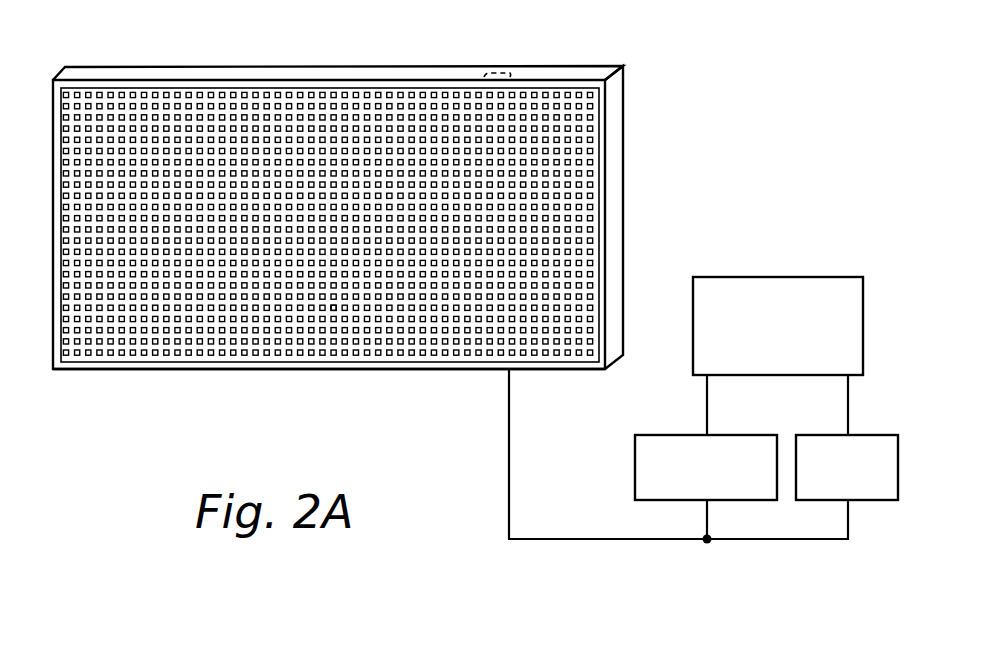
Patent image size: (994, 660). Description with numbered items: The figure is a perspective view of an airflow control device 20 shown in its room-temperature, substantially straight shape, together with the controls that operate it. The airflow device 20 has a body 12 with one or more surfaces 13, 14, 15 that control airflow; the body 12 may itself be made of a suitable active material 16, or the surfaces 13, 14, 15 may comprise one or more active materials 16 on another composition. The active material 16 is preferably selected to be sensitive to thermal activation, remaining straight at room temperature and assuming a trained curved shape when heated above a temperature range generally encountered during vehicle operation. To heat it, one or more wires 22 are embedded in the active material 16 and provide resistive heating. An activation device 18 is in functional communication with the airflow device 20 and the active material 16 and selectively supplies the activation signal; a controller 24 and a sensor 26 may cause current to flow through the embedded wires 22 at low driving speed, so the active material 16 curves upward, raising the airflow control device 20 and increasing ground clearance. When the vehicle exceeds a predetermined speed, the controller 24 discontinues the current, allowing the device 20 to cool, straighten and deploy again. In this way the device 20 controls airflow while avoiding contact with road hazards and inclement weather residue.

The body 12 is at (615, 170).
The surface 13 is at (138, 80).
The surface 14 is at (512, 238).
The surface 15 is at (500, 70).
The active material 16 is at (200, 367).
The activation device 18 is at (675, 435).
The airflow control device 20 is at (687, 103).
The wires 22 is at (330, 313).
The controller 24 is at (772, 276).
The sensor 26 is at (830, 435).